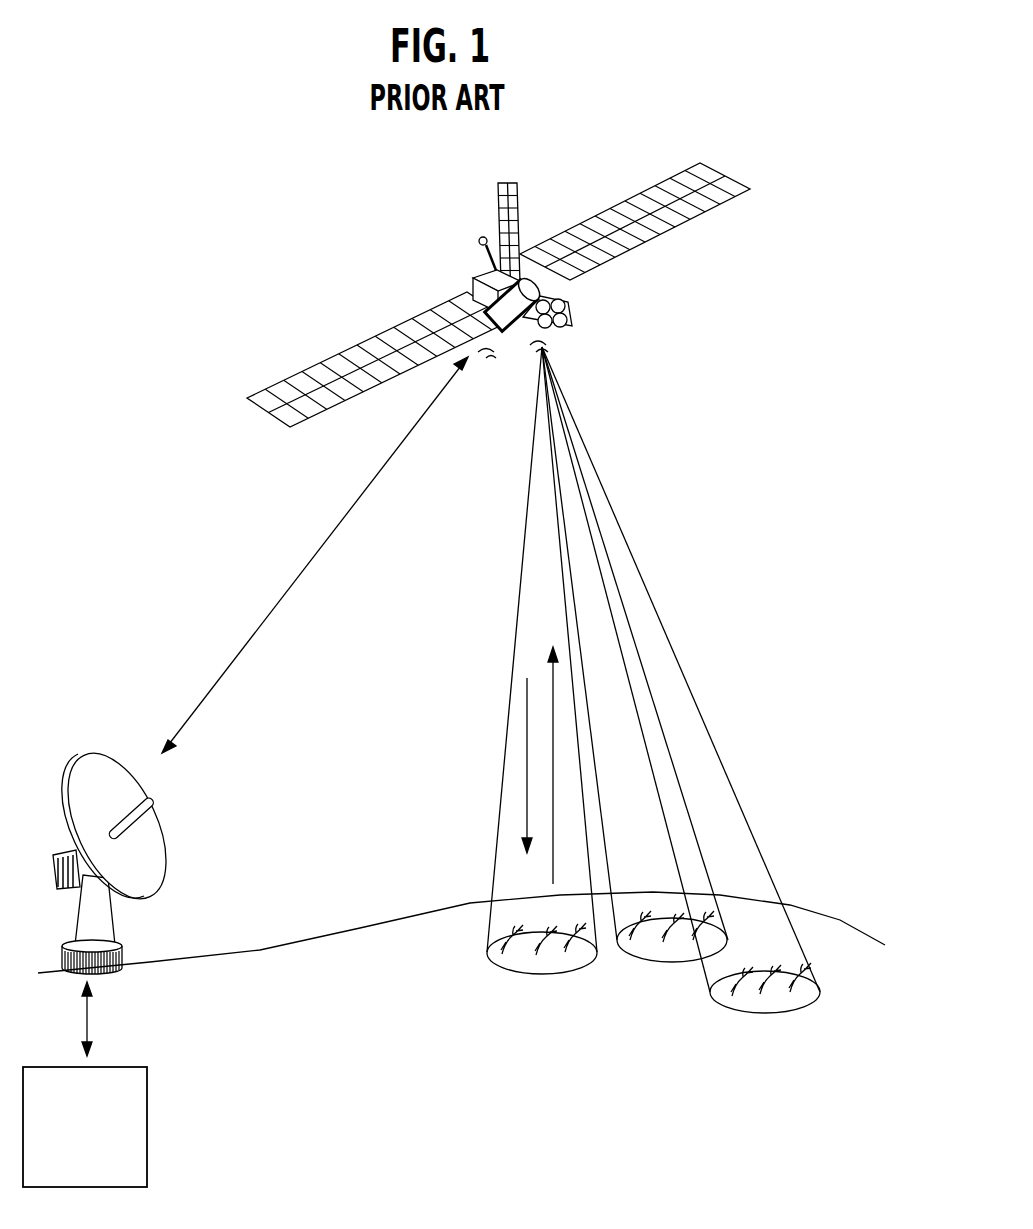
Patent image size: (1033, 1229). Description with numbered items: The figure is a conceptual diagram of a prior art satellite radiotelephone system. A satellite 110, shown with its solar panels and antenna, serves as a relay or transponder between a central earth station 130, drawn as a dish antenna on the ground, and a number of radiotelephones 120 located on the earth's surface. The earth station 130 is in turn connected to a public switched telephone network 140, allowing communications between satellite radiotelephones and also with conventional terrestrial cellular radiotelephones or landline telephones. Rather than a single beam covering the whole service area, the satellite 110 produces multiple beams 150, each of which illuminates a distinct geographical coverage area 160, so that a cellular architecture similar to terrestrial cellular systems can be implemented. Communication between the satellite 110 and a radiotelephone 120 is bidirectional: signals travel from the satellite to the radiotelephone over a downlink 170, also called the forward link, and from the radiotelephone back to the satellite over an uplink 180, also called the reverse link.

The satellite 110 is at (493, 285).
The radiotelephone 120 is at (693, 939).
The central earth station 130 is at (115, 933).
The public switched telephone network 140 is at (148, 1073).
The beams 150 is at (637, 598).
The geographical coverage areas 160 is at (492, 966).
The downlink 170 is at (527, 719).
The uplink 180 is at (555, 815).